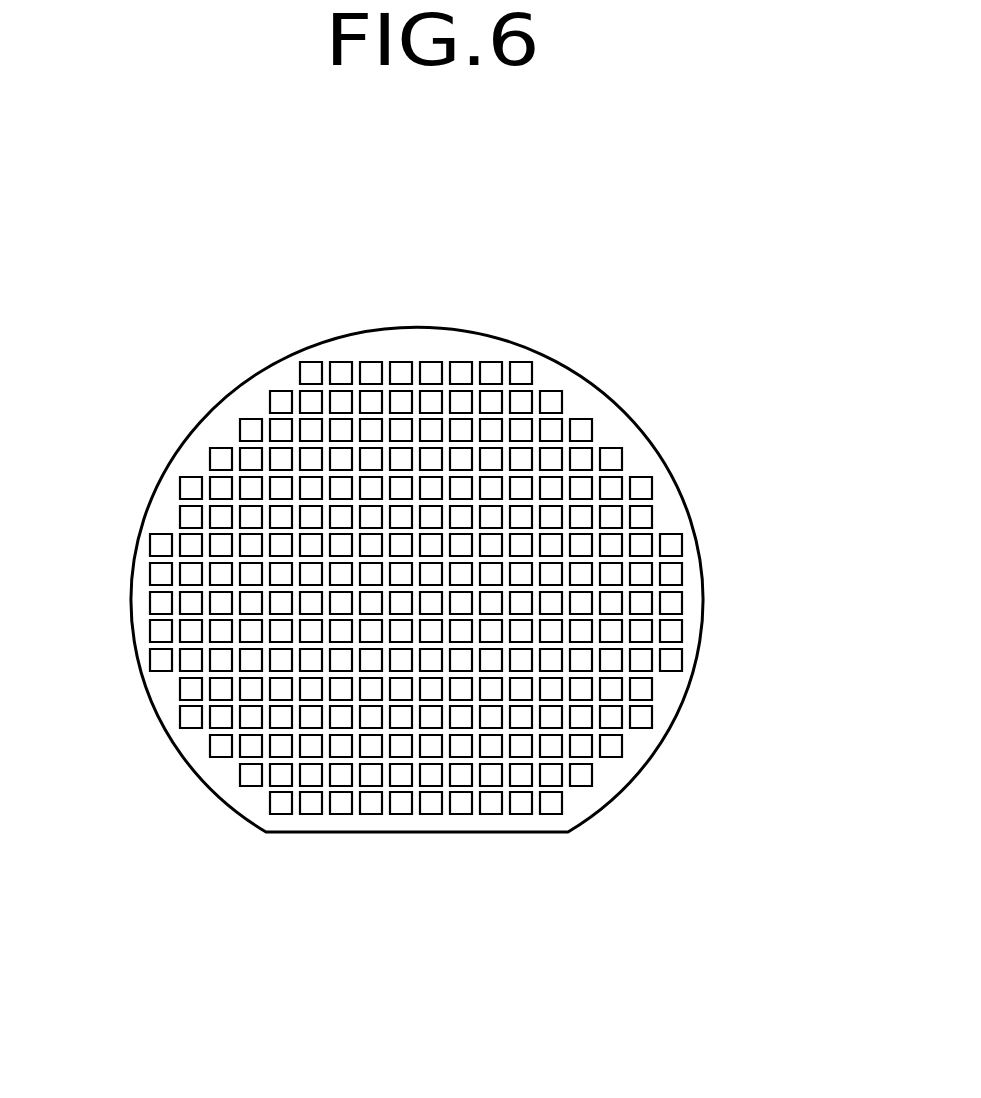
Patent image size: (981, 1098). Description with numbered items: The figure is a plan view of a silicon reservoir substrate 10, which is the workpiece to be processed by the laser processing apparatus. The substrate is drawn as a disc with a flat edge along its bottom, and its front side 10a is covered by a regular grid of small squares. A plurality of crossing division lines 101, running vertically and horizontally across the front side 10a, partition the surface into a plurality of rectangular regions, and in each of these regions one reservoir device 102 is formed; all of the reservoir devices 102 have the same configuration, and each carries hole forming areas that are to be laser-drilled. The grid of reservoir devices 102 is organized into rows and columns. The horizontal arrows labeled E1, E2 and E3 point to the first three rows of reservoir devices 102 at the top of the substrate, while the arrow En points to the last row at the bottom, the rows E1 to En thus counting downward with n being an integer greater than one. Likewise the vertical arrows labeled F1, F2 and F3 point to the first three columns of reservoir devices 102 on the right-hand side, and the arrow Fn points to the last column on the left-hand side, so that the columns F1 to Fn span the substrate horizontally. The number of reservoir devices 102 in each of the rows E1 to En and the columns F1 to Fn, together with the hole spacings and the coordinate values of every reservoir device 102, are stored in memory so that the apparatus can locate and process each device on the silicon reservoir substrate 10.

The silicon reservoir substrate 10 is at (436, 324).
The front side 10a is at (165, 501).
The division lines 101 is at (157, 643).
The reservoir devices 102 is at (160, 603).
The first row of reservoir devices E1 is at (548, 373).
The second row of reservoir devices E2 is at (576, 402).
The third row of reservoir devices E3 is at (607, 431).
The n-th row of reservoir devices En is at (773, 447).
The first column of reservoir devices F1 is at (674, 684).
The second column of reservoir devices F2 is at (644, 741).
The third column of reservoir devices F3 is at (615, 769).
The n-th column of reservoir devices Fn is at (592, 917).